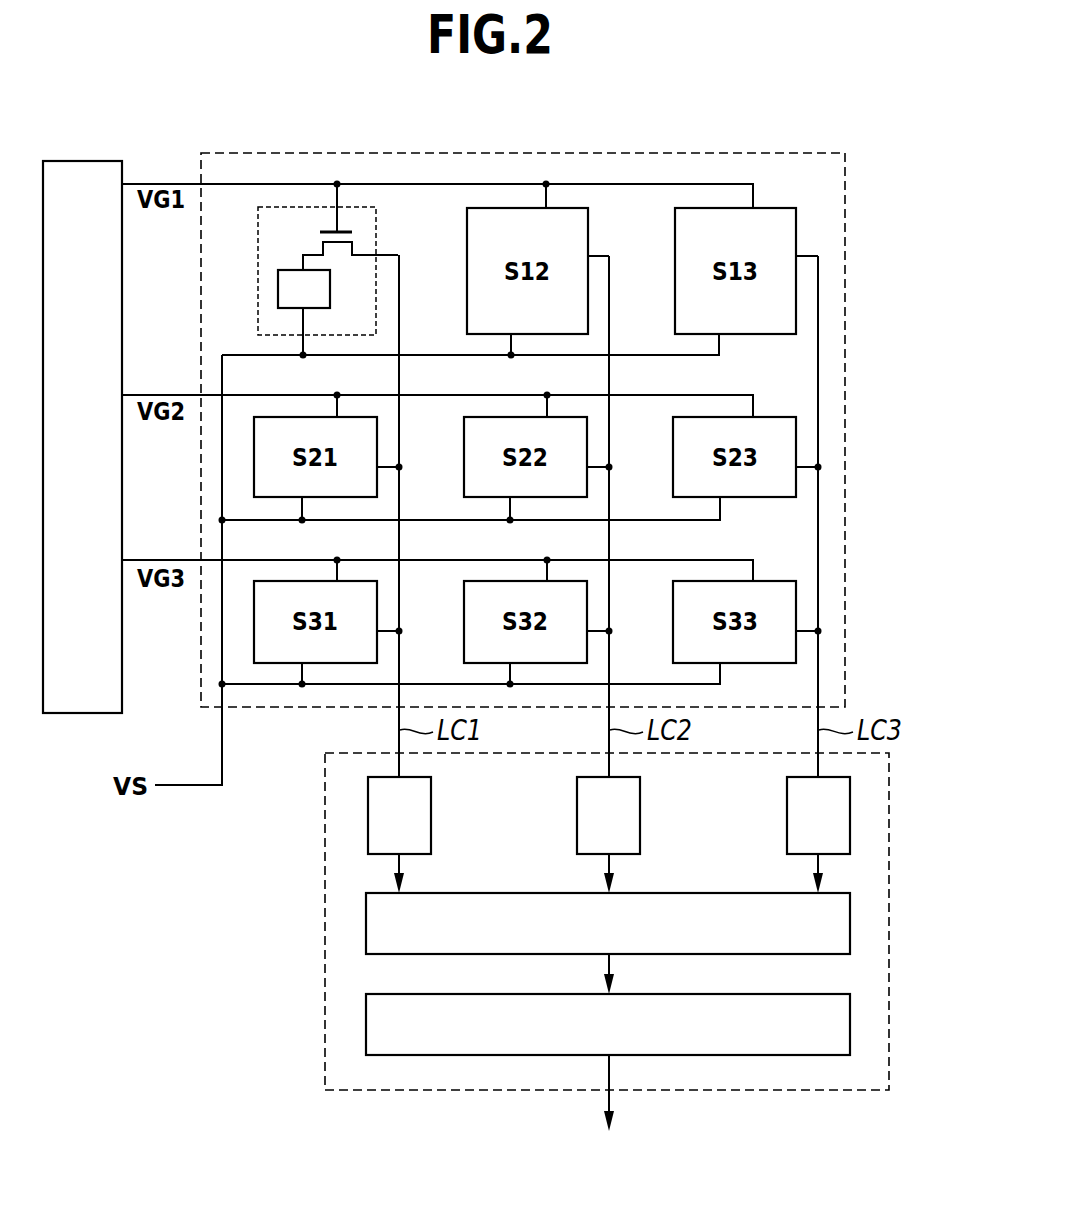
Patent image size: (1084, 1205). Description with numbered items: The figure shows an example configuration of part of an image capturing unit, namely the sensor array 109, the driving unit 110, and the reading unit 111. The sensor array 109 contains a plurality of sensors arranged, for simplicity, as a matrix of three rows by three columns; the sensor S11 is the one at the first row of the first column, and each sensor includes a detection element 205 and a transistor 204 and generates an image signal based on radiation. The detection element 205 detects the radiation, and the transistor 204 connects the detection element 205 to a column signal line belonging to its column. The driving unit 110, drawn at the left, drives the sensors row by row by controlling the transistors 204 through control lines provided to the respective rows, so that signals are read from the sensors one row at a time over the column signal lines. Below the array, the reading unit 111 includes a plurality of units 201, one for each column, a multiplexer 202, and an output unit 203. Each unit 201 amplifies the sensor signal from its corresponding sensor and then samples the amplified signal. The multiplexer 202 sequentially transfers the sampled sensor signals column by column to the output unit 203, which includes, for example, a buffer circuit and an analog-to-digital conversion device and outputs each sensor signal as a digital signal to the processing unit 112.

The driving unit 110 is at (87, 161).
The sensor array 109 is at (725, 153).
The sensor S11 is at (376, 213).
The transistor 204 is at (306, 236).
The detection element 205 is at (278, 300).
The reading unit 111 is at (325, 1036).
The unit 201 is at (661, 835).
The multiplexer 202 is at (850, 919).
The output unit 203 is at (850, 1020).
The processing unit 112 is at (608, 1111).